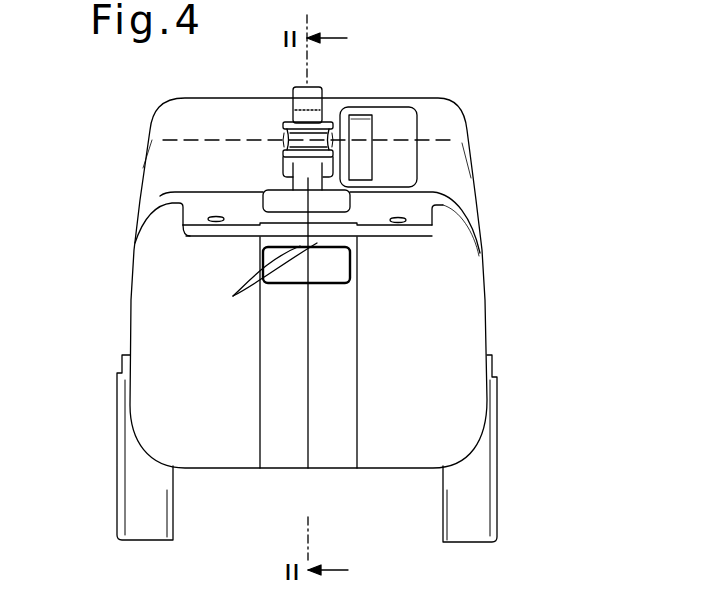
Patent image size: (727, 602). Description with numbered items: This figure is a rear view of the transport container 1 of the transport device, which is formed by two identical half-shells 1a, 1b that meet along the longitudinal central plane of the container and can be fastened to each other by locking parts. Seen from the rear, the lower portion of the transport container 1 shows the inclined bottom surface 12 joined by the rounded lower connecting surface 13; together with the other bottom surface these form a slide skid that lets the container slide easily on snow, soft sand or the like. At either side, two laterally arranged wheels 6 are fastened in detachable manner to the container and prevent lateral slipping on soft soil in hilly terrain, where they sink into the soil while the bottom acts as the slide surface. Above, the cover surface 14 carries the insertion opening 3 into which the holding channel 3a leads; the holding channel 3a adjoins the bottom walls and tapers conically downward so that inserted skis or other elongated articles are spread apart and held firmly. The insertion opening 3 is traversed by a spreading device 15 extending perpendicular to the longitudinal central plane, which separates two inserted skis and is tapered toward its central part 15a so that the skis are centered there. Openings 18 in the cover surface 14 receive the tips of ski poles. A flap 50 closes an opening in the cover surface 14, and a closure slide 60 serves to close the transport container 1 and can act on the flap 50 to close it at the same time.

The transport container 1 is at (462, 83).
The half-shell 1a is at (476, 293).
The half-shell 1b is at (139, 297).
The insertion opening 3 is at (283, 195).
The holding channel 3a is at (325, 390).
The wheel 6 is at (130, 505).
The bottom surface 12 is at (389, 440).
The connecting surface 13 is at (245, 469).
The cover surface 14 is at (168, 162).
The spreading device 15 is at (270, 238).
The central part 15a is at (266, 285).
The opening 18 is at (207, 222).
The flap 50 is at (385, 110).
The closure slide 60 is at (283, 128).